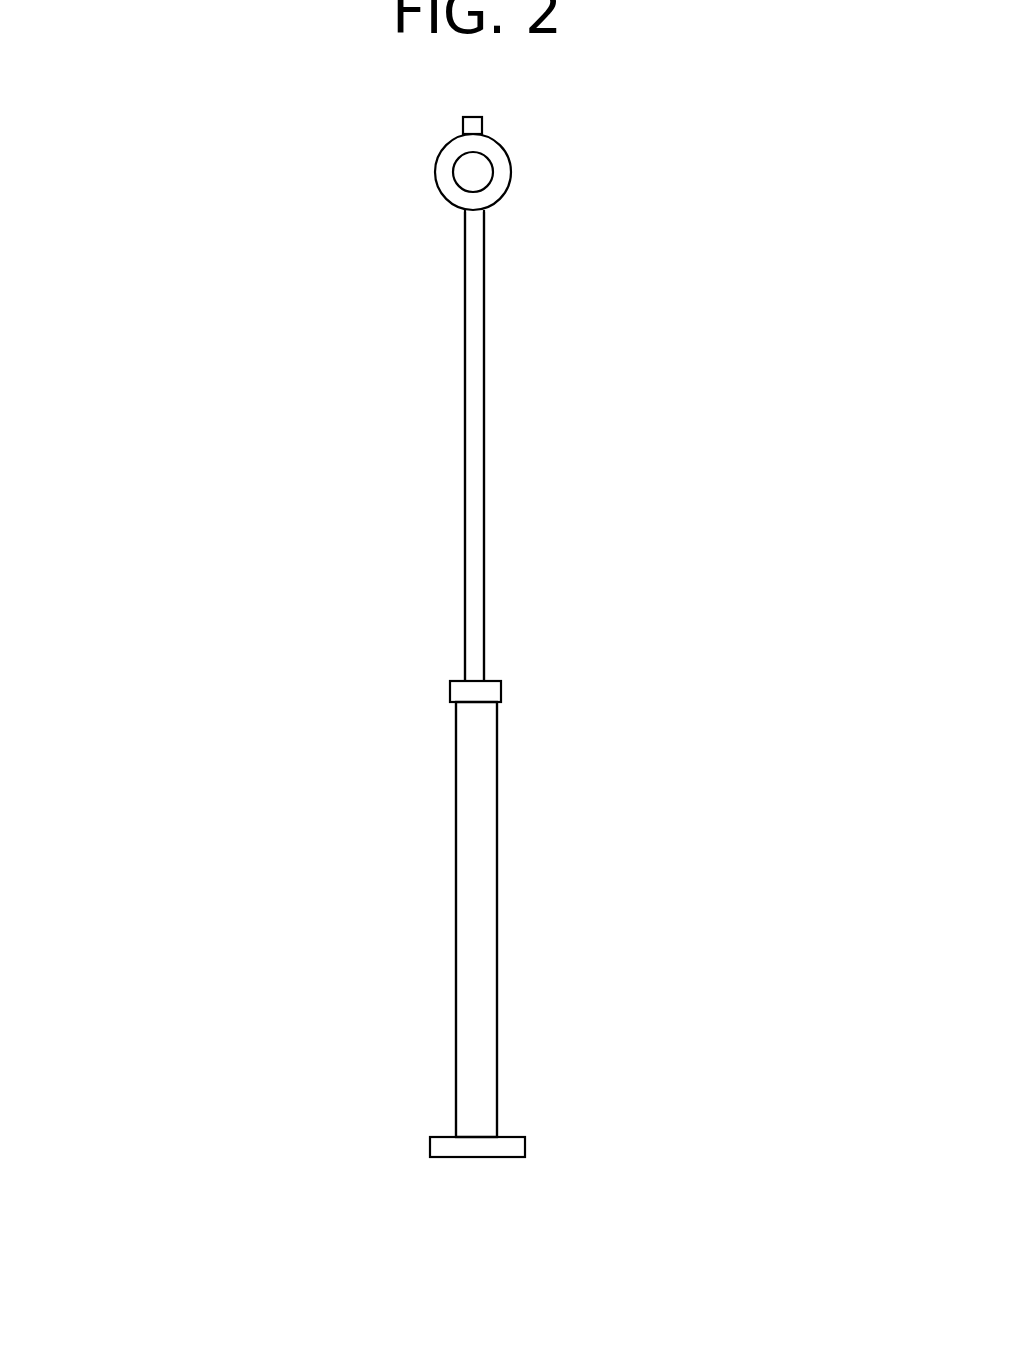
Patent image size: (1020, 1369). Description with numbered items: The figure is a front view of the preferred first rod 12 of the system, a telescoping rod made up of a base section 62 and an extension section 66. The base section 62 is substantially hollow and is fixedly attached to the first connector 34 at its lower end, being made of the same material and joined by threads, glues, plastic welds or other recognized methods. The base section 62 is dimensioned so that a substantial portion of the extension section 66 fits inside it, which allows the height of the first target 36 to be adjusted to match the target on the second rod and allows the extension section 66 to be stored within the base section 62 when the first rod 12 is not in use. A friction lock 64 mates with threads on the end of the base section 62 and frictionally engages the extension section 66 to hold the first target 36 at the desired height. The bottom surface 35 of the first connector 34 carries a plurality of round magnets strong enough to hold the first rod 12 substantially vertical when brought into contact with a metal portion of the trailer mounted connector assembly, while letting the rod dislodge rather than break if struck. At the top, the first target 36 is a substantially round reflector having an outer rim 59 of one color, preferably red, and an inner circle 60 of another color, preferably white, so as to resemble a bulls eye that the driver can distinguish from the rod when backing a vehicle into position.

The first rod 12 is at (583, 562).
The first connector 34 is at (442, 1145).
The bottom surface 35 is at (488, 1157).
The first target 36 is at (510, 190).
The outer rim 59 is at (493, 154).
The inner circle 60 is at (470, 172).
The base section 62 is at (475, 845).
The friction lock 64 is at (469, 698).
The extension section 66 is at (468, 514).